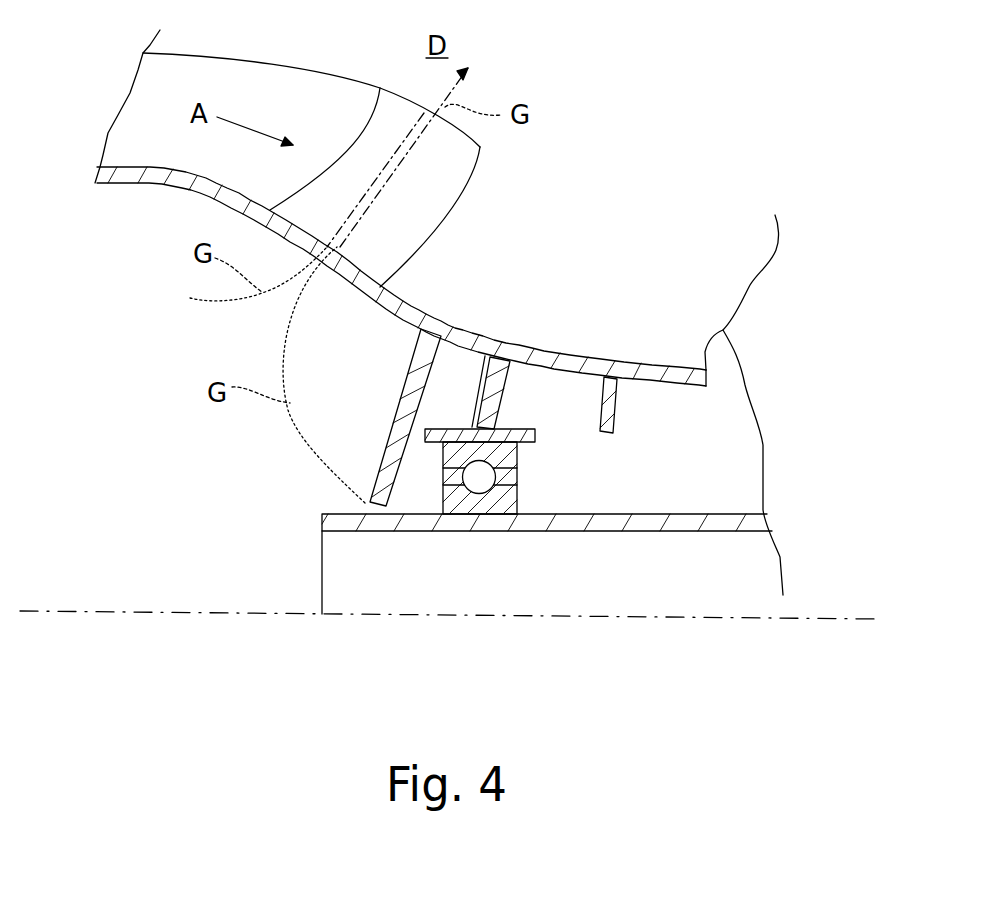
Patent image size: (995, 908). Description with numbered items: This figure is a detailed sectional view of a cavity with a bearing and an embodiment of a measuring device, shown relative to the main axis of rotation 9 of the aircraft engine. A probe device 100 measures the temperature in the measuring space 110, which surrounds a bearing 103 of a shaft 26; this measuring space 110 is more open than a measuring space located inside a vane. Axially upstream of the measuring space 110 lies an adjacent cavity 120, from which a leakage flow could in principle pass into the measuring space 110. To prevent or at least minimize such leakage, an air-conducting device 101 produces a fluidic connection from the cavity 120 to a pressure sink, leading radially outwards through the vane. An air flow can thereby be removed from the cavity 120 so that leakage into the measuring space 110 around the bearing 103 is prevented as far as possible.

The main axis of rotation 9 is at (625, 615).
The shaft 26 is at (737, 514).
The probe device 100 is at (620, 397).
The air-conducting device 101 is at (418, 158).
The bearing 103 is at (517, 452).
The measuring space 110 is at (723, 489).
The cavity 120 is at (370, 426).